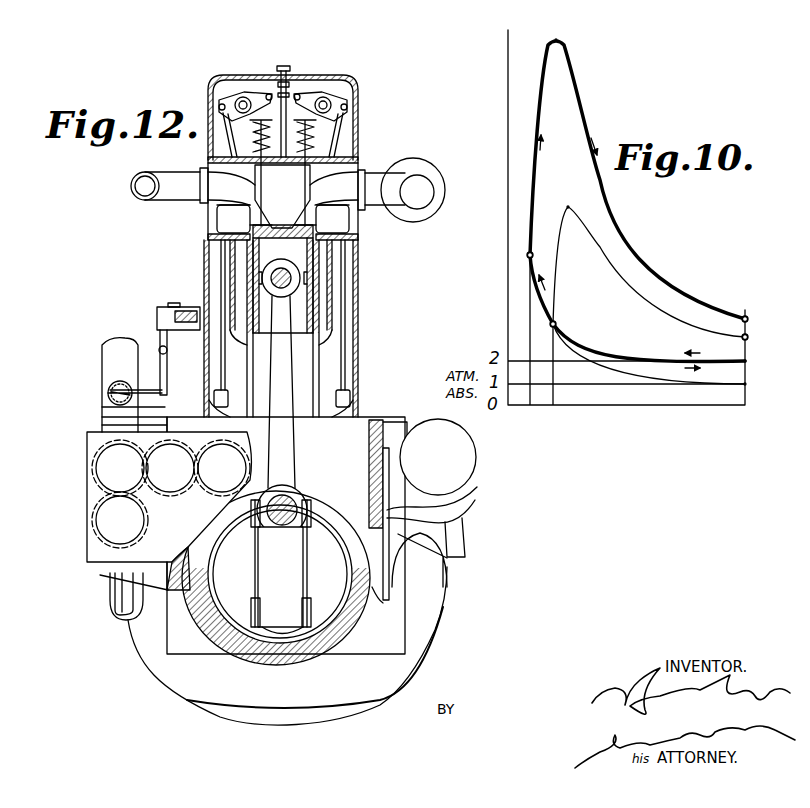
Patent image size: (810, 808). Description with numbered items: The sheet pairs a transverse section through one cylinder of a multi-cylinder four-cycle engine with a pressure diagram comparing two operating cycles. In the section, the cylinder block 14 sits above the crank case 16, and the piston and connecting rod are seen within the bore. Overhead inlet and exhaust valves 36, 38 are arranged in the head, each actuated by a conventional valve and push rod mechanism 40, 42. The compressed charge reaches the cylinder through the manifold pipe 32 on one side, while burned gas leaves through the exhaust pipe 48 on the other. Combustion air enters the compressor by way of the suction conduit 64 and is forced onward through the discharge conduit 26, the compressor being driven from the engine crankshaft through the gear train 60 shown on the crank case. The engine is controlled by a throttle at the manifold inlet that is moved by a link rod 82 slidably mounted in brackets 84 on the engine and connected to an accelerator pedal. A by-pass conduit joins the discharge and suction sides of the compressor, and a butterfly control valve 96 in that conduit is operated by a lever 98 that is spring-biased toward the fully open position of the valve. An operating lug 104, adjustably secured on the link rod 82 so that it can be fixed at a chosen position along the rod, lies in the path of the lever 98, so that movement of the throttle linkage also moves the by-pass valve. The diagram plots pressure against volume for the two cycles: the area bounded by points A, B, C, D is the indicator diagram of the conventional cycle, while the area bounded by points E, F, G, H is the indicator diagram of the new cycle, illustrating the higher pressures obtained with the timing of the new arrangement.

In FIG. 12, the cylinder block 14 is at (320, 377).
In FIG. 12, the crank case 16 is at (178, 683).
In FIG. 12, the discharge conduit 26 is at (108, 387).
In FIG. 12, the manifold pipe 32 is at (133, 179).
In FIG. 12, the inlet valve 36 is at (237, 207).
In FIG. 12, the exhaust valve 38 is at (330, 210).
In FIG. 12, the valve and push rod mechanism 40 is at (215, 250).
In FIG. 12, the valve and push rod mechanism 42 is at (345, 298).
In FIG. 12, the exhaust pipe 48 is at (420, 178).
In FIG. 12, the gear train 60 is at (165, 497).
In FIG. 12, the suction conduit 64 is at (106, 355).
In FIG. 12, the link rod 82 is at (170, 303).
In FIG. 12, the brackets 84 is at (186, 305).
In FIG. 12, the control valve 96 is at (108, 403).
In FIG. 12, the lever 98 is at (167, 370).
In FIG. 12, the operating lug 104 is at (157, 327).
In FIG. 10, the point A is at (747, 384).
In FIG. 10, the point B is at (551, 324).
In FIG. 10, the point C is at (568, 205).
In FIG. 10, the point D is at (747, 337).
In FIG. 10, the point E is at (747, 361).
In FIG. 10, the point F is at (528, 255).
In FIG. 10, the point G is at (562, 40).
In FIG. 10, the point H is at (747, 320).